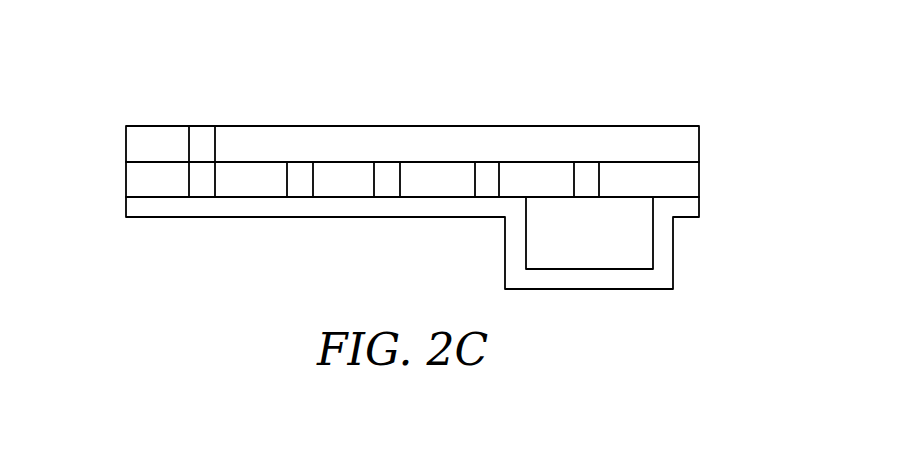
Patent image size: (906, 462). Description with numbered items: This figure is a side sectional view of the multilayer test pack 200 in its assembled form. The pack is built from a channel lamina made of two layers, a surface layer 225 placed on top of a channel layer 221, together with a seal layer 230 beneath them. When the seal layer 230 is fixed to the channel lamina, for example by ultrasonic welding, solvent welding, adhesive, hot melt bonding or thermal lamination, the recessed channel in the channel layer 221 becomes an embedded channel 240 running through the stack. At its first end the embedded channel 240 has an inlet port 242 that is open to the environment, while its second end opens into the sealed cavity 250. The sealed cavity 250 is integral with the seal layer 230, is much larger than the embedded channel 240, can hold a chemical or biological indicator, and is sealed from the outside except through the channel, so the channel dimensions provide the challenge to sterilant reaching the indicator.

The multilayer test pack 200 is at (643, 77).
The surface layer 225 is at (138, 142).
The channel layer 221 is at (138, 183).
The seal layer 230 is at (130, 208).
The inlet port 242 is at (203, 138).
The embedded channel 240 is at (302, 182).
The sealed cavity 250 is at (679, 247).